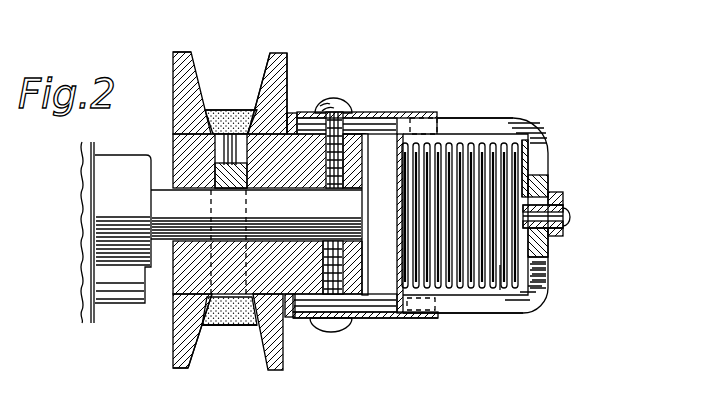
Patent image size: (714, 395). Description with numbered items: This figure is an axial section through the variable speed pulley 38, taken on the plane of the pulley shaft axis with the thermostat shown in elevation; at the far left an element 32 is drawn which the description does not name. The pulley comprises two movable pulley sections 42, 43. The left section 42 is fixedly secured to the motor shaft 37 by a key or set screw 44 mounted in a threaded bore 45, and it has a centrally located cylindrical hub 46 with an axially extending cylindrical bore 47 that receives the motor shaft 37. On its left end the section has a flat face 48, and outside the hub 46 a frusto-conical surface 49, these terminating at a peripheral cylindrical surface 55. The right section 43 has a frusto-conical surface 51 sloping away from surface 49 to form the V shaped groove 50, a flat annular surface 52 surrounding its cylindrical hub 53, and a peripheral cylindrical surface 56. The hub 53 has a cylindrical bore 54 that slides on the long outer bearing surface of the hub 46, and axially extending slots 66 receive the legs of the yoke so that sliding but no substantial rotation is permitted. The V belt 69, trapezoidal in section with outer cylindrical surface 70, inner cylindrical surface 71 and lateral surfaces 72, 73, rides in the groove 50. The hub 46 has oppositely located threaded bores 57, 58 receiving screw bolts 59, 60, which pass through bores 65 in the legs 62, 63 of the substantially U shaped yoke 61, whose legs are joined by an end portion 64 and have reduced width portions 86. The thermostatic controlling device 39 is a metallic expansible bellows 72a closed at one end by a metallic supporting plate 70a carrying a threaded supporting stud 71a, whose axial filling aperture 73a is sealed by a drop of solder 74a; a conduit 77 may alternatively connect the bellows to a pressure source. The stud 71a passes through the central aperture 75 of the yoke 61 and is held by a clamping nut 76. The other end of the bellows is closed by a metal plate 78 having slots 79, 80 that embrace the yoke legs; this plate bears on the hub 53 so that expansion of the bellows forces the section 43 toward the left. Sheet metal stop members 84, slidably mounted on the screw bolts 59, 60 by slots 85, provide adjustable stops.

The drive shaft 32 is at (82, 203).
The motor shaft 37 is at (160, 186).
The set screw 44 is at (213, 156).
The threaded bore 45 is at (269, 161).
The cylindrical bore 47 is at (284, 238).
The flat face 48 is at (173, 100).
The cylindrical surface 55 is at (178, 52).
The frusto-conical surface 49 is at (185, 86).
The pulley section 42 is at (198, 92).
The frusto-conical surface 51 is at (237, 104).
The pulley section 43 is at (268, 68).
The cylindrical surface 56 is at (271, 72).
The variable speed pulley 38 is at (290, 63).
The cylindrical hub 46 is at (298, 112).
The flat annular surface 52 is at (292, 110).
The bore 65 is at (340, 110).
The screw bolt 59 is at (353, 104).
The reduced width portion 86 is at (398, 101).
The slot 80 is at (423, 116).
The threaded bore 57 is at (356, 157).
The metal plate 78 is at (400, 205).
The slot 79 is at (384, 296).
The inner cylindrical surface 71 is at (234, 294).
The screw bolt 60 is at (358, 322).
The cylindrical hub 53 is at (306, 320).
The axially extending slot 66 is at (287, 316).
The cylindrical bore 54 is at (318, 324).
The stop member 84 is at (384, 322).
The slot 85 is at (378, 320).
The threaded bore 58 is at (380, 318).
The yoke 61 is at (463, 130).
The leg 62 is at (447, 128).
The leg 63 is at (464, 308).
The thermostatic controlling device 39 is at (490, 141).
The end portion 64 is at (537, 167).
The metallic supporting plate 70a is at (525, 163).
The clamping nut 76 is at (552, 190).
The threaded supporting stud 71a is at (568, 194).
The drop of solder 74a is at (565, 213).
The axial filling aperture 73a is at (563, 223).
The conduit 77 is at (558, 240).
The aperture 75 is at (538, 258).
The outer cylindrical surface 70 is at (222, 333).
The V belt 69 is at (210, 323).
The lateral cylindrical surface 72 is at (208, 308).
The lateral cylindrical surface 73 is at (241, 311).
The V shaped groove 50 is at (236, 336).
The bellows 72a is at (500, 290).